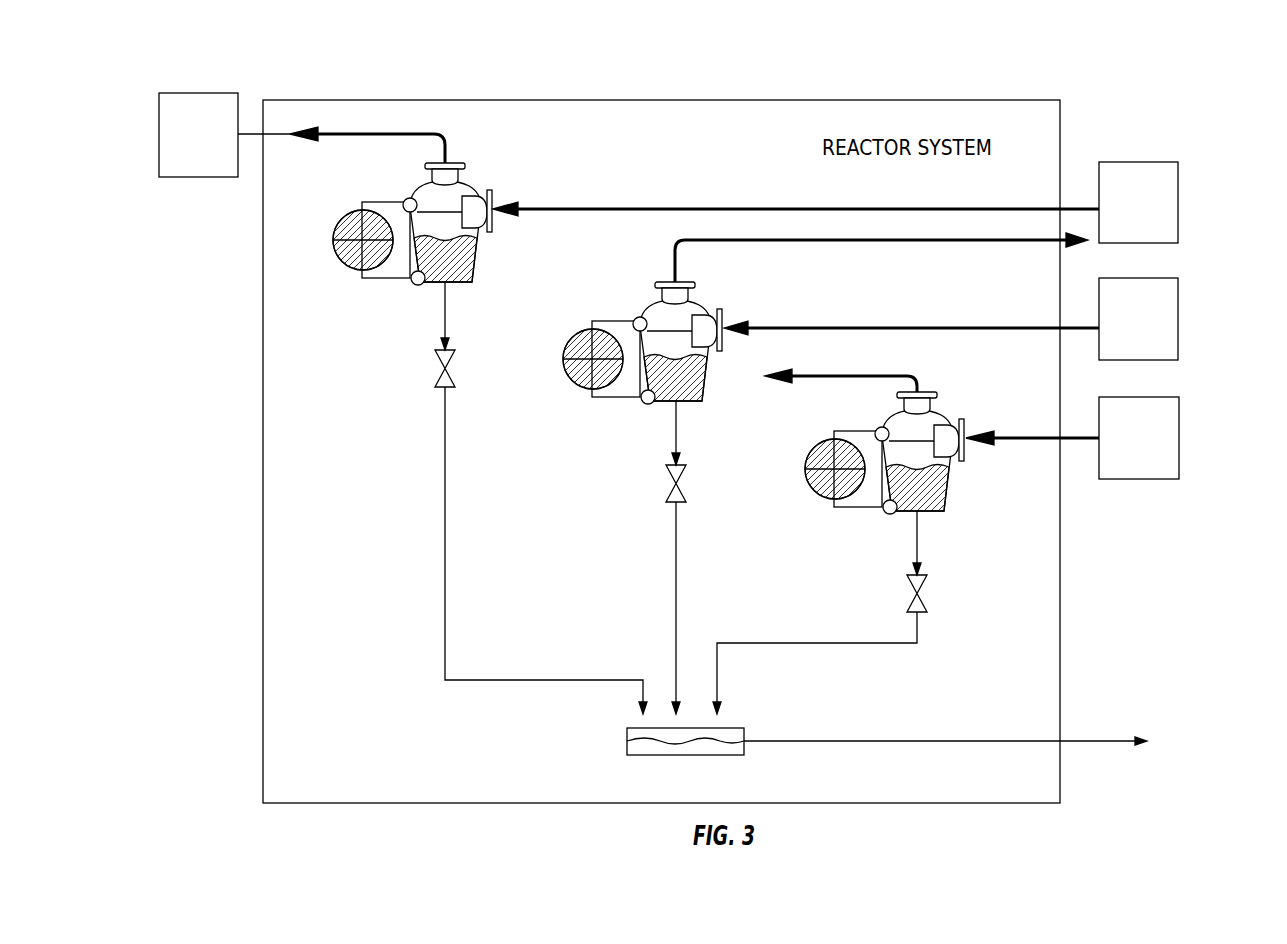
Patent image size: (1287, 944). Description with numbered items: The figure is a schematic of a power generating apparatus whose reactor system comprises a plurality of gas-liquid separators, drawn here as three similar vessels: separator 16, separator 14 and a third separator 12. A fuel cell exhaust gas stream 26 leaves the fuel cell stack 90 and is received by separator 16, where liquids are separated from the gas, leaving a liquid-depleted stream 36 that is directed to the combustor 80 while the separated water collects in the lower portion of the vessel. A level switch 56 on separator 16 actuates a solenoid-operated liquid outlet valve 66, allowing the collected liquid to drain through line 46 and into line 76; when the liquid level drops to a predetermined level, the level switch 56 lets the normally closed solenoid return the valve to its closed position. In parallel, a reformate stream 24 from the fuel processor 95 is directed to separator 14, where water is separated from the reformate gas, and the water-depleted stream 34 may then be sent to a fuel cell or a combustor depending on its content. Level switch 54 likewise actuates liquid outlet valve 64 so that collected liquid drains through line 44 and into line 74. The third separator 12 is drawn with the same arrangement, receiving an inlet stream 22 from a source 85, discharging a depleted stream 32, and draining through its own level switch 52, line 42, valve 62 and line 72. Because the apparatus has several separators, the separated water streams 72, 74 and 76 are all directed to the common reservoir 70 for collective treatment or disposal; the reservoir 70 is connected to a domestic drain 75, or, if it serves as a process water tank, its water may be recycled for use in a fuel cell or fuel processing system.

The first reactor vessel 12 is at (955, 460).
The separator 14 is at (714, 350).
The separator 16 is at (480, 228).
The feed line from source 85 22 is at (1004, 438).
The reformate stream 24 is at (1002, 328).
The fuel cell exhaust gas stream 26 is at (1002, 209).
The outlet line from reactor 12 32 is at (858, 376).
The water-depleted stream 34 is at (862, 244).
The liquid-depleted stream 36 is at (381, 134).
The drain line of reactor 12 42 is at (919, 530).
The line 44 is at (678, 420).
The line 46 is at (448, 305).
The level sensor of reactor 12 52 is at (813, 490).
The level switch 54 is at (563, 370).
The level switch 56 is at (334, 252).
The drain valve 62 is at (908, 606).
The liquid outlet valve 64 is at (665, 494).
The liquid outlet valve 66 is at (436, 382).
The reservoir 70 is at (733, 728).
The separated water stream 72 is at (830, 645).
The line 74 is at (677, 578).
The line 76 is at (446, 522).
The domestic drain line 75 is at (1193, 760).
The combustor 80 is at (210, 92).
The supply source 85 is at (1179, 436).
The fuel cell stack 90 is at (1178, 210).
The fuel processor 95 is at (1178, 330).